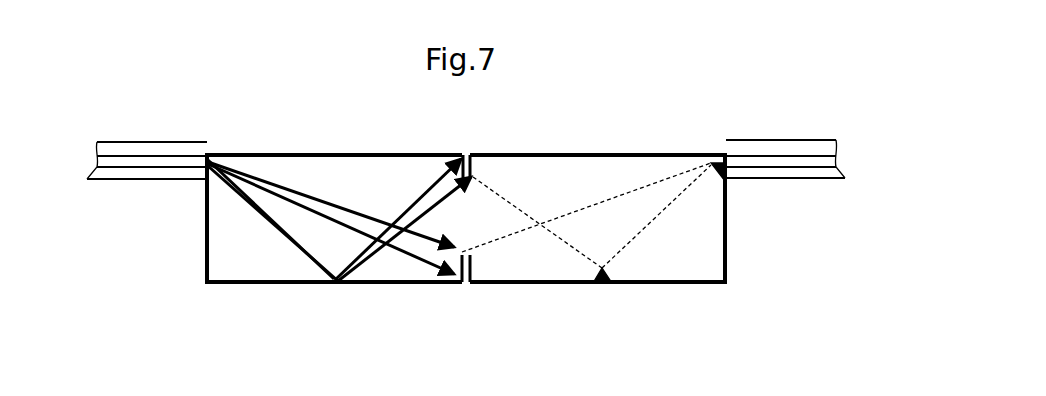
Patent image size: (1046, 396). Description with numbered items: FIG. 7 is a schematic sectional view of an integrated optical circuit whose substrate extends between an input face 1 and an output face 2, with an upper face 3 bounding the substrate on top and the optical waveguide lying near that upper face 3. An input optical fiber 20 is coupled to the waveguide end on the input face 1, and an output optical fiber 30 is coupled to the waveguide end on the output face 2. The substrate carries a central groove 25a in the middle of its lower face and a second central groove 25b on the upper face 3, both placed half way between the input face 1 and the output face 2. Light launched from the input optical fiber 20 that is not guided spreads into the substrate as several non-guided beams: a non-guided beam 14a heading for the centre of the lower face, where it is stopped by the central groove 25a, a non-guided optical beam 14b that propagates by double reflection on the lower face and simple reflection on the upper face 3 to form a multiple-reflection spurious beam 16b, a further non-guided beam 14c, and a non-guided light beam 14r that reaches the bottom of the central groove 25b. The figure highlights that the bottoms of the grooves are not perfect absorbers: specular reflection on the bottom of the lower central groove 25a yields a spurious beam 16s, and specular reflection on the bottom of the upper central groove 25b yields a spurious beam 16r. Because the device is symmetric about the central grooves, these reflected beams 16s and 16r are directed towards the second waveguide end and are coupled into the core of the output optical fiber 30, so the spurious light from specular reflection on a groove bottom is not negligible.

The input face 1 is at (207, 238).
The output face 2 is at (727, 232).
The upper face 3 is at (658, 155).
The input optical fiber 20 is at (160, 142).
The output optical fiber 30 is at (765, 140).
The non-guided beam 14a is at (273, 182).
The non-guided optical beam 14b is at (283, 245).
The third light beam 14c is at (347, 200).
The non-guided light beam 14r is at (313, 265).
The multiple-reflection spurious beam 16b is at (410, 202).
The spurious beam by specular reflection 16s is at (578, 200).
The spurious beam by specular reflection 16r is at (648, 252).
The central groove 25a is at (465, 283).
The central groove 25b is at (468, 155).